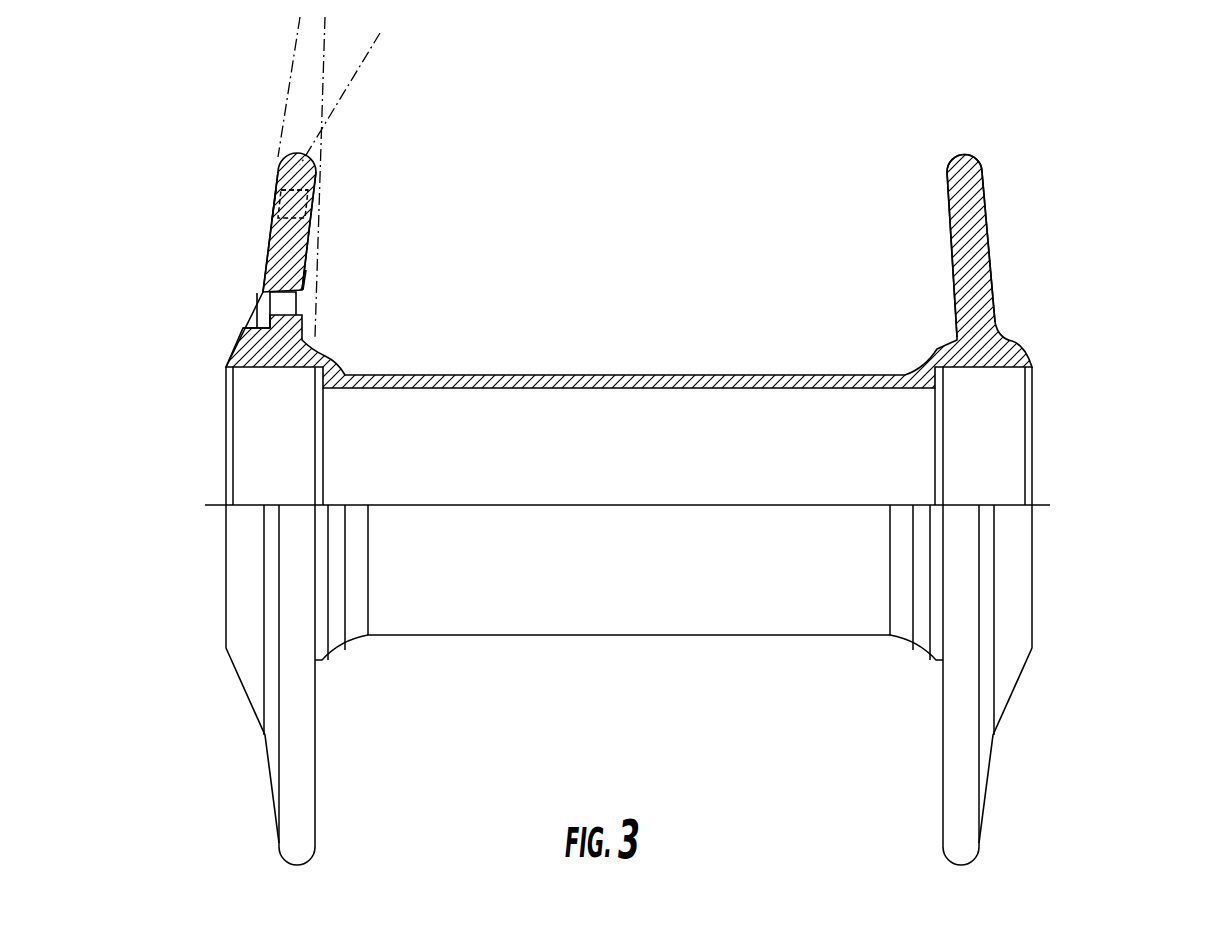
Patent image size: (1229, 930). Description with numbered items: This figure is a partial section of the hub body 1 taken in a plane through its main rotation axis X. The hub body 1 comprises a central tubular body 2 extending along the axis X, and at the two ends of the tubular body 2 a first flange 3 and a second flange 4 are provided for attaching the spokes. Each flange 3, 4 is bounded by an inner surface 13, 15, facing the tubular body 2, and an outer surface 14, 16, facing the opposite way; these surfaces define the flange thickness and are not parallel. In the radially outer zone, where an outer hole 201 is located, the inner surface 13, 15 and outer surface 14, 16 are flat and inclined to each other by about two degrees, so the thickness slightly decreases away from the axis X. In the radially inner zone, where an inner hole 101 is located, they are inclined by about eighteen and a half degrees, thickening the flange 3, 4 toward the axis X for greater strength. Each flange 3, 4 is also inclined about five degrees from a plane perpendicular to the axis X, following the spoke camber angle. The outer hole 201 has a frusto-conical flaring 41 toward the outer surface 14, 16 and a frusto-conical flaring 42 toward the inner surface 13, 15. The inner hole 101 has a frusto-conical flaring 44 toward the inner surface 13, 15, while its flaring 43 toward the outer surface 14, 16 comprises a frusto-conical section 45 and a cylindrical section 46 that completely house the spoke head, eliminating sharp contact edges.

The hub body 1 is at (1078, 174).
The central tubular body 2 is at (641, 383).
The first flange 3 is at (305, 160).
The second flange 4 is at (972, 164).
The inner surface 13 is at (318, 173).
The outer surface 14 is at (278, 183).
The inner surface 15 is at (947, 203).
The outer surface 16 is at (987, 210).
The flaring 41 is at (276, 208).
The flaring 42 is at (303, 213).
The flaring 43 is at (246, 302).
The flaring 44 is at (299, 304).
The frusto-conical section 45 is at (258, 292).
The cylindrical section 46 is at (246, 318).
The inner hole 101 is at (306, 282).
The outer hole 201 is at (300, 190).
The main rotation axis X is at (1040, 505).